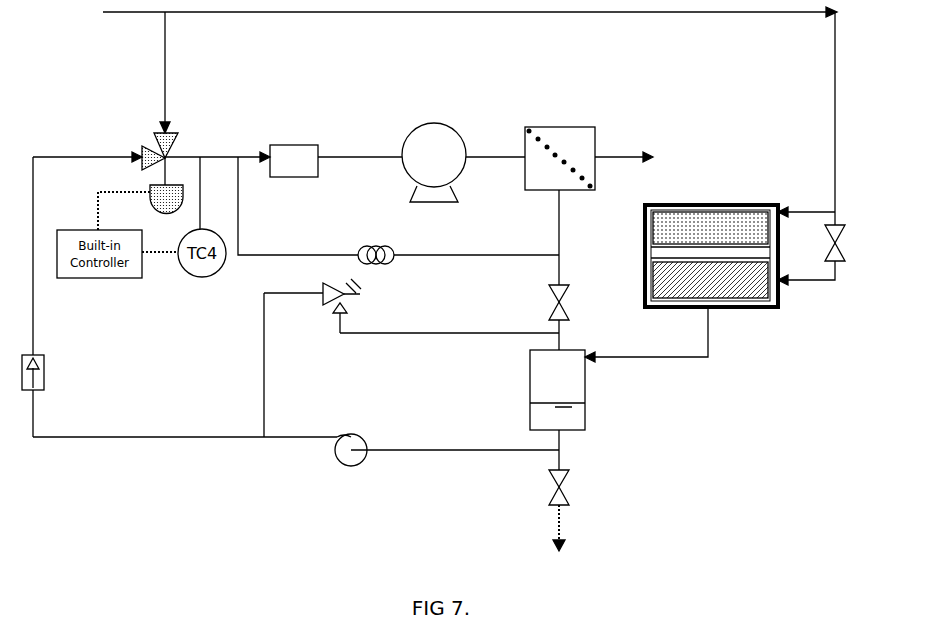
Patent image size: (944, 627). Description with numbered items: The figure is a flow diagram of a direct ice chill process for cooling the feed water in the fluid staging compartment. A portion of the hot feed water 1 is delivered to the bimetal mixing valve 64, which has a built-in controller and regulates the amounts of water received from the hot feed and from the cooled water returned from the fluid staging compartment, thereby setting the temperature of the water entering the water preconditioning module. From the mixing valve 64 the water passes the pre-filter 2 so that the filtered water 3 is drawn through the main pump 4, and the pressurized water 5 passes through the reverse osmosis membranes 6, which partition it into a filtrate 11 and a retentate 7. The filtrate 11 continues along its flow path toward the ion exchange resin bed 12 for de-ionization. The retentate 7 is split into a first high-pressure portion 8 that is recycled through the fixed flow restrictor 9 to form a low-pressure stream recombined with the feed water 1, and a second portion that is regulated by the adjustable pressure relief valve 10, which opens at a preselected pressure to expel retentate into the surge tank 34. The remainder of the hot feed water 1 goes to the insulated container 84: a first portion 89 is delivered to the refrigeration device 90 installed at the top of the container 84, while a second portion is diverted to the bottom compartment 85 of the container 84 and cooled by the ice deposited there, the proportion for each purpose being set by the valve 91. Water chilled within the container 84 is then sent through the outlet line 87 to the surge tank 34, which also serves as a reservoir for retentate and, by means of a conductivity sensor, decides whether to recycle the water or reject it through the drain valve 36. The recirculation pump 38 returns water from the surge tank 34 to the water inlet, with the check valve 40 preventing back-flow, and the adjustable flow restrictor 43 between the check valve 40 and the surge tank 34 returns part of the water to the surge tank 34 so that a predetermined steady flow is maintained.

The feed water 1 is at (147, 12).
The bimetal mixing valve 64 is at (143, 150).
The pre-filter 2 is at (272, 145).
The filtered water 3 is at (350, 157).
The main pump 4 is at (413, 127).
The pressurized water 5 is at (480, 160).
The reverse osmosis membranes 6 is at (548, 127).
The ion exchange resin bed 12 is at (622, 153).
The retentate 7 is at (544, 237).
The first high-pressure portion 8 is at (476, 240).
The fixed flow restrictor 9 is at (366, 246).
The adjustable pressure relief valve 10 is at (298, 206).
The filtrate 11 is at (552, 310).
The adjustable flow restrictor 43 is at (325, 298).
The surge tank 34 is at (530, 402).
The drain valve 36 is at (540, 478).
The recirculation pump 38 is at (325, 457).
The check valve 40 is at (44, 365).
The insulated container 84 is at (645, 250).
The refrigeration device 90 is at (697, 210).
The lower tank compartment 85 is at (723, 280).
The first portion 89 is at (808, 210).
The valve 91 is at (843, 258).
The line from storage tank to surge tank 87 is at (667, 358).